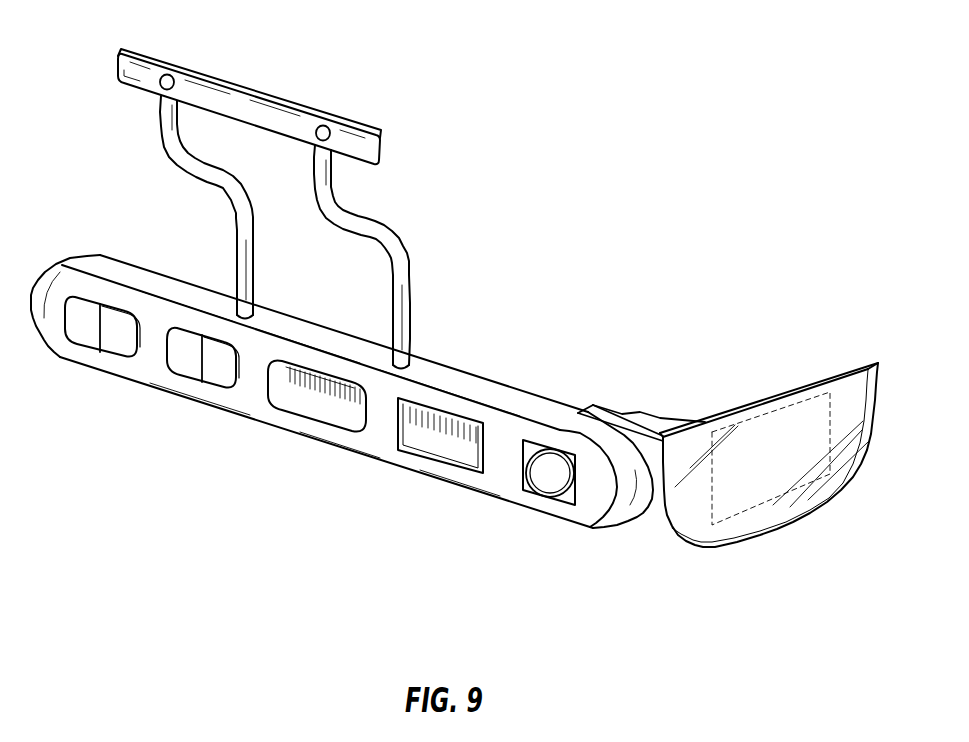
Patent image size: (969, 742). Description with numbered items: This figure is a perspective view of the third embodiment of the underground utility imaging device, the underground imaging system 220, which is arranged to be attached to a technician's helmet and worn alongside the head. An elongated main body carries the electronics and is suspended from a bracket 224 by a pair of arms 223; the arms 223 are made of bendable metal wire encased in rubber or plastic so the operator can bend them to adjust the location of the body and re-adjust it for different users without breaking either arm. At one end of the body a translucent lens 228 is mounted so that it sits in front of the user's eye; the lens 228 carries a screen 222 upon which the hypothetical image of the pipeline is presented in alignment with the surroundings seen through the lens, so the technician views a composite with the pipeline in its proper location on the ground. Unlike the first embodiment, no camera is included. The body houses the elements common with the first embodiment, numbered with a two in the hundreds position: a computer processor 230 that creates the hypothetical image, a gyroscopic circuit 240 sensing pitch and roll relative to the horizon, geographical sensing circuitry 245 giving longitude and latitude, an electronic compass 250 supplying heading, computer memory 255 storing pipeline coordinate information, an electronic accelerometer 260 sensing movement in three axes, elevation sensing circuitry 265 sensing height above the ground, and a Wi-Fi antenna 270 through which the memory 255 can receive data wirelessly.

The underground imaging system 220 is at (650, 72).
The screen 222 is at (793, 467).
The arms 223 is at (177, 178).
The bracket 224 is at (257, 93).
The translucent lens 228 is at (735, 547).
The computer processor 230 is at (448, 447).
The gyroscopic circuit 240 is at (543, 482).
The geographical sensing circuitry 245 is at (342, 413).
The electronic compass 250 is at (298, 395).
The computer memory 255 is at (225, 375).
The electronic accelerometer 260 is at (183, 355).
The elevation sensing circuitry 265 is at (120, 342).
The Wi-Fi antenna 270 is at (78, 323).